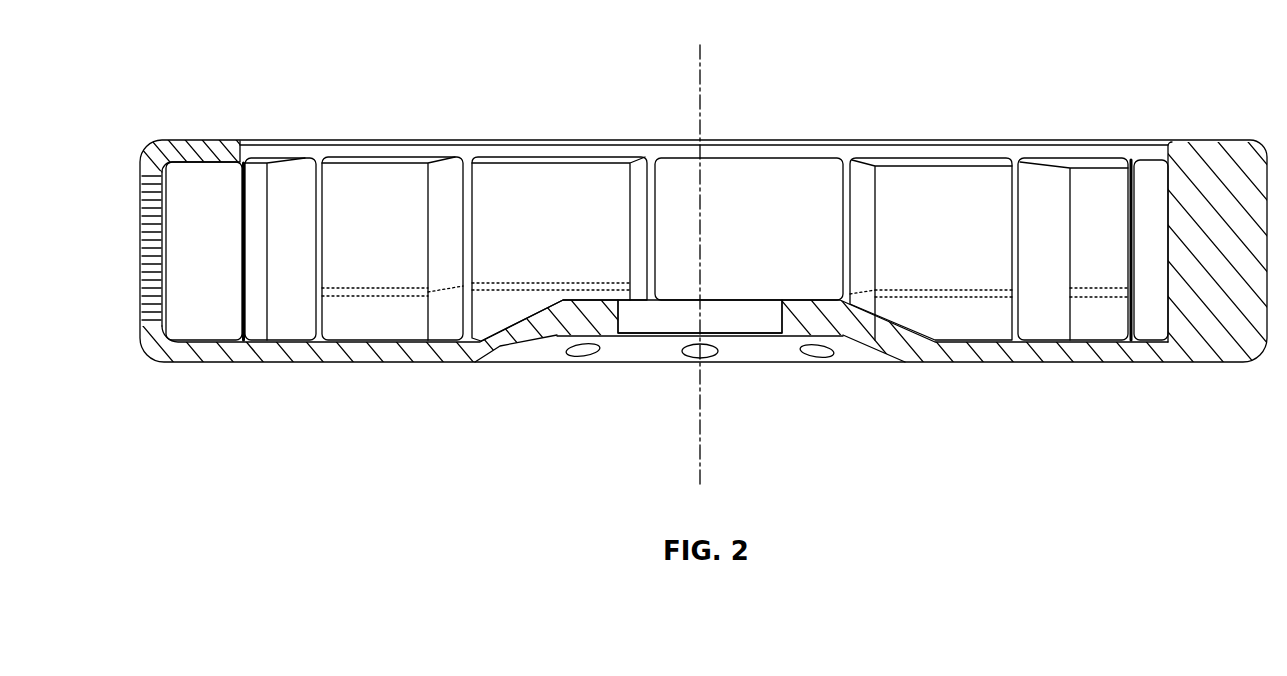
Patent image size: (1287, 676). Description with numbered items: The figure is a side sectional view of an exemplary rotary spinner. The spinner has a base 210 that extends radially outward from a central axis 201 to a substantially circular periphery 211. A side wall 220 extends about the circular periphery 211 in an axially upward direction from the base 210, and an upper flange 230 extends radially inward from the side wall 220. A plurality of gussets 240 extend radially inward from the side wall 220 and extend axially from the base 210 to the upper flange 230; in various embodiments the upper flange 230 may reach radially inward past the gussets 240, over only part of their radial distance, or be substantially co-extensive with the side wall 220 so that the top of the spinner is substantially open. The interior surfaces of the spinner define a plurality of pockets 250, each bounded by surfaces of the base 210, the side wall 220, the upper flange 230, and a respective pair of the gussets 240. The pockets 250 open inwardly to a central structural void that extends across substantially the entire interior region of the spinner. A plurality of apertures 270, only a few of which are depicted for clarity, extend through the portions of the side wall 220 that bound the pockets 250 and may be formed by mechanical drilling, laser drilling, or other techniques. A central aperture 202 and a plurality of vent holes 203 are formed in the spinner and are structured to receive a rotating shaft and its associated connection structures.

The central axis 201 is at (705, 74).
The central aperture 202 is at (637, 320).
The vent holes 203 is at (578, 353).
The base 210 is at (352, 361).
The circular periphery 211 is at (127, 366).
The side wall 220 is at (163, 246).
The upper flange 230 is at (176, 158).
The gussets 240 is at (222, 166).
The pockets 250 is at (396, 221).
The apertures 270 is at (141, 186).